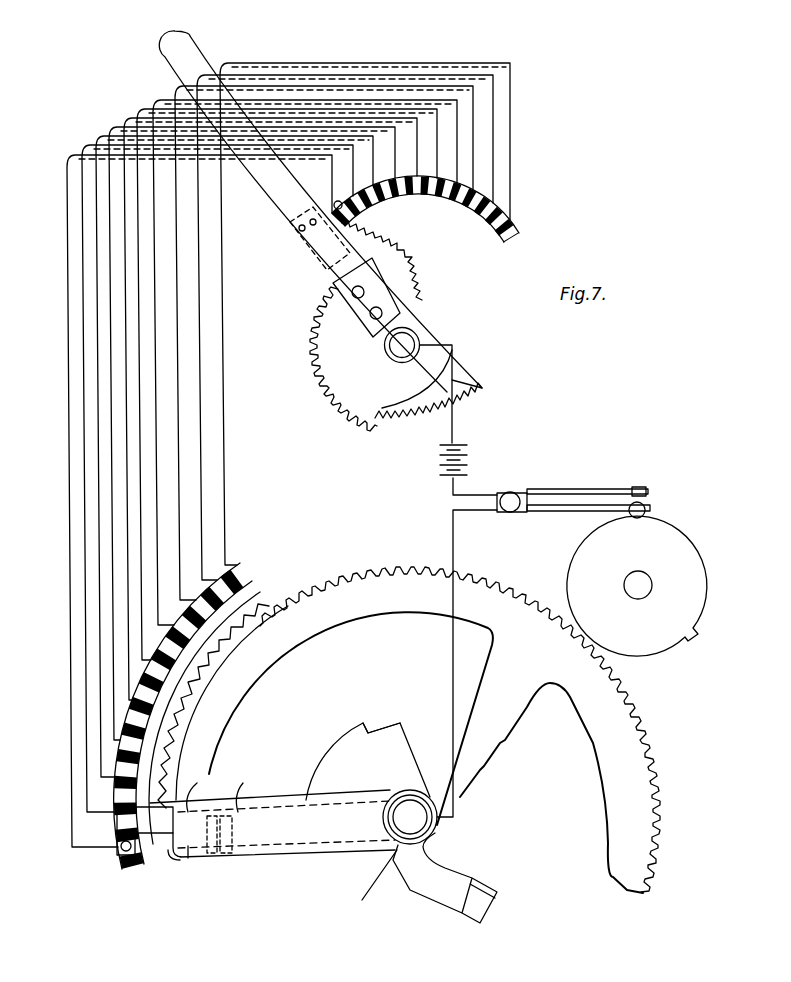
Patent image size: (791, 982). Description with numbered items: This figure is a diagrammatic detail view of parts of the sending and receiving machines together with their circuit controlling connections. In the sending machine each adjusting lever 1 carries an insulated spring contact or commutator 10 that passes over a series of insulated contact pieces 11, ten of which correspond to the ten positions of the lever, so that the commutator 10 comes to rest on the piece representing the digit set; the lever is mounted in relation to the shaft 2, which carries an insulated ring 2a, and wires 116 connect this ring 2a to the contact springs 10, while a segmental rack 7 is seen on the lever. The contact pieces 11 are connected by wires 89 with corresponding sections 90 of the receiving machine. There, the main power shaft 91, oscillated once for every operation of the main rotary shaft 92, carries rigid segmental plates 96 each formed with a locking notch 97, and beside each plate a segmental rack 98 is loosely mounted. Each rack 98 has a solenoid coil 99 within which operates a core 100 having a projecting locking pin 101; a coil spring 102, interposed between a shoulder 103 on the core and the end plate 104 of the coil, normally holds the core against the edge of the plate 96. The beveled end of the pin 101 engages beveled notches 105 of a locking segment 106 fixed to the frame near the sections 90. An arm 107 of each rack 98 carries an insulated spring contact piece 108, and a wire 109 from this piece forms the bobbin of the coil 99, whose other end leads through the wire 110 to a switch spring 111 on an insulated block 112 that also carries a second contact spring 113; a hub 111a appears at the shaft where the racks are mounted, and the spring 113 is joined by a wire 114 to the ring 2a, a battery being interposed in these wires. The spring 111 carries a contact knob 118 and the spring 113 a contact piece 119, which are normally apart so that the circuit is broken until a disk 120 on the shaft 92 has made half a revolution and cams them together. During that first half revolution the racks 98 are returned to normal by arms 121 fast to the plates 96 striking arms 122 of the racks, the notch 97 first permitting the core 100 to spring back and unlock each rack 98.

The adjusting lever 1 is at (197, 50).
The shaft 2 is at (385, 348).
The insulated ring 2a is at (402, 362).
The toothed rack segment 7 is at (382, 410).
The spring contact or commutator 10 is at (300, 226).
The contact pieces 11 is at (415, 205).
The wires 89 is at (225, 436).
The sections 90 is at (150, 716).
The main power shaft 91 is at (403, 838).
The main rotary shaft 92 is at (638, 574).
The segmental plate 96 is at (368, 761).
The locking notch 97 is at (369, 731).
The segmental rack 98 is at (460, 729).
The solenoid coil 99 is at (278, 802).
The core 100 is at (278, 845).
The locking pin 101 is at (215, 780).
The coil spring 102 is at (222, 856).
The shoulder 103 is at (262, 780).
The end plate 104 is at (189, 860).
The beveled notches 105 is at (215, 648).
The locking segment 106 is at (178, 662).
The arm 107 is at (130, 818).
The spring contact piece 108 is at (118, 848).
The wire 109 is at (172, 862).
The wire 110 is at (457, 658).
The switch spring 111 is at (510, 515).
The hub 111a is at (437, 822).
The insulated block 112 is at (512, 495).
The contact spring 113 is at (580, 489).
The wire 114 is at (456, 374).
The wires 116 is at (414, 259).
The contact knob 118 is at (725, 515).
The contact piece 119 is at (643, 488).
The disk 120 is at (655, 639).
The arm 121 is at (484, 888).
The arm 122 is at (500, 700).